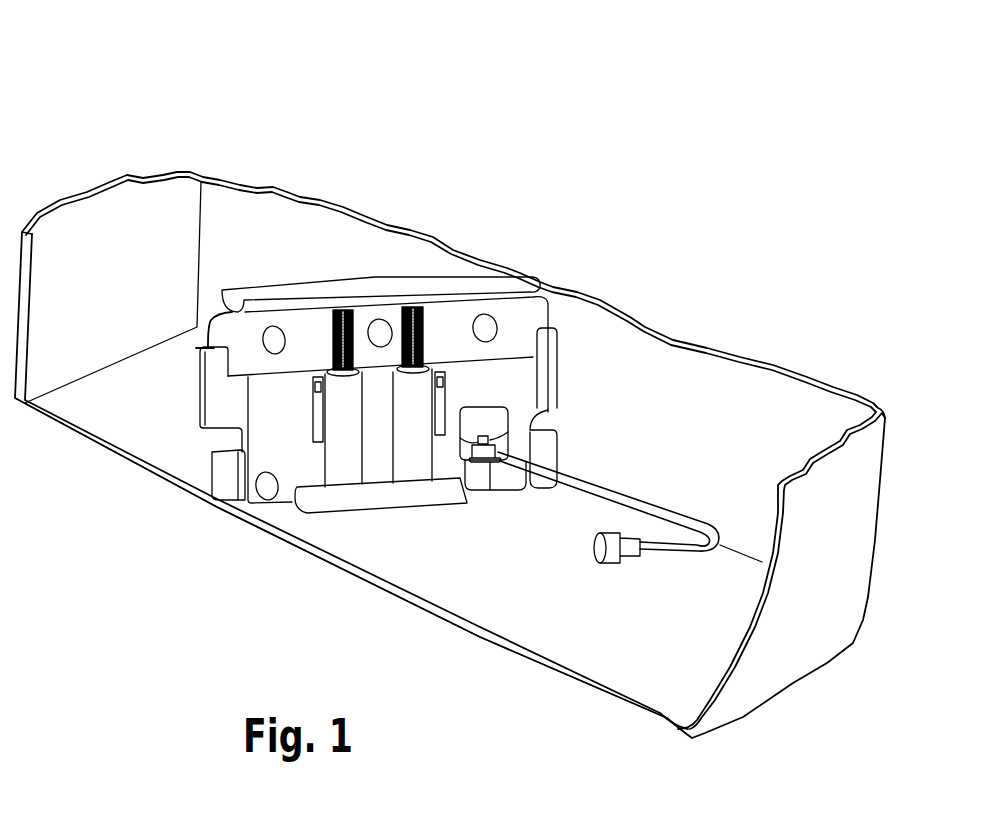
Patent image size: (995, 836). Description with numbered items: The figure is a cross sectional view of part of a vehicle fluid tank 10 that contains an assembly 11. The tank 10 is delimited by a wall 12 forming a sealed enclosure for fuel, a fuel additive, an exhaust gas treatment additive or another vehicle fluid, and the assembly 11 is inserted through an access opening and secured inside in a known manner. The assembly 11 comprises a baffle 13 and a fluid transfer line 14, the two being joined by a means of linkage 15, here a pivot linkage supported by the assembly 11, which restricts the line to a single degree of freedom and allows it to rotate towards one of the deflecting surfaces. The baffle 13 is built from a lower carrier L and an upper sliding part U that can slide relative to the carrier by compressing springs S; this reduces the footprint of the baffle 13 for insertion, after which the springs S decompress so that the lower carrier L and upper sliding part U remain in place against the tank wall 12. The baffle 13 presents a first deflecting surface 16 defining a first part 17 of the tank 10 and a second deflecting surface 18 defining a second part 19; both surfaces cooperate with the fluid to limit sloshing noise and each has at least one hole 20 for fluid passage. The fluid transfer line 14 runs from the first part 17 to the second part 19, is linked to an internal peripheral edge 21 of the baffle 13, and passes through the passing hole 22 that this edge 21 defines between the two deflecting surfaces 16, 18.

The vehicle fluid tank 10 is at (82, 152).
The assembly 11 is at (180, 415).
The wall 12 is at (312, 324).
The baffle 13 is at (458, 292).
The fluid transfer line 14 is at (662, 517).
The means of linkage 15 is at (530, 440).
The first deflecting surface 16 is at (266, 292).
The first part 17 is at (604, 626).
The second deflecting surface 18 is at (194, 322).
The second part 19 is at (110, 405).
The hole 20 is at (378, 330).
The internal peripheral edge 21 is at (510, 432).
The passing hole 22 is at (488, 415).
The upper sliding part U is at (306, 328).
The lower carrier L is at (270, 447).
The compression means S is at (343, 307).